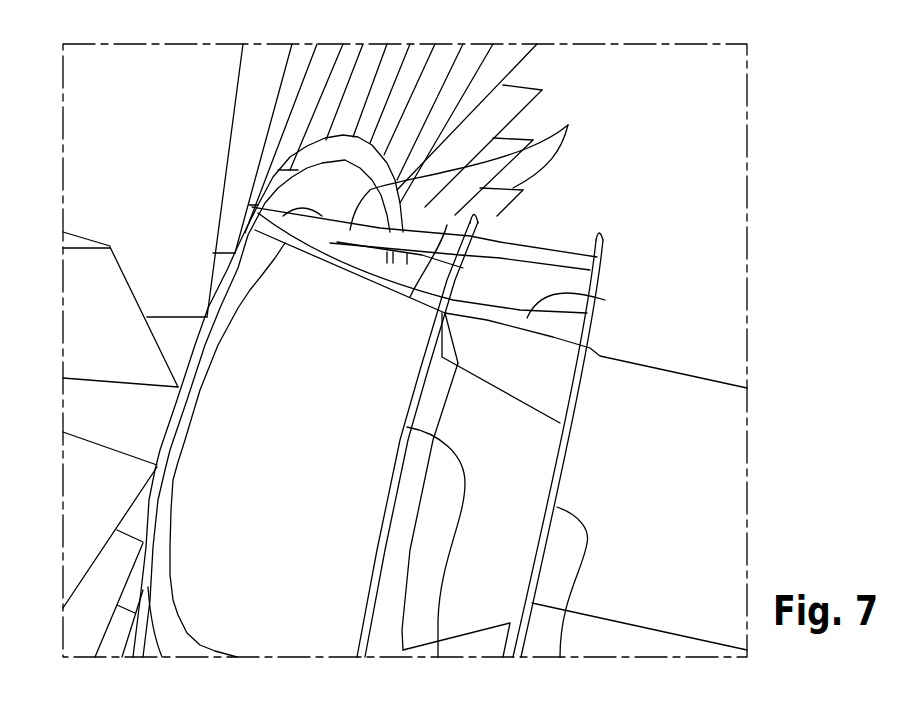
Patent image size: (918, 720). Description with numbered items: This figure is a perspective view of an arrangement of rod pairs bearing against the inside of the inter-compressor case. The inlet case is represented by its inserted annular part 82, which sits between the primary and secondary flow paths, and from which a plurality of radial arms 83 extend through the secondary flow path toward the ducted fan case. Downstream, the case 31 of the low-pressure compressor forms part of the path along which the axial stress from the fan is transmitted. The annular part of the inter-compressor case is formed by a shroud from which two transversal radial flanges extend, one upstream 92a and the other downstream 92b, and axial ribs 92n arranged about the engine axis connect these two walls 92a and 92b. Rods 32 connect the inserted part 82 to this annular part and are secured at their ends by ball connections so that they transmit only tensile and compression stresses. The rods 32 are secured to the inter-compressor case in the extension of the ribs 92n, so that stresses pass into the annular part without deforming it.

The radial arms 83 is at (190, 169).
The rods 32 is at (454, 137).
The case of the LP compressor 31 is at (252, 547).
The inserted annular part 82 is at (135, 420).
The upstream radial flange 92a is at (438, 657).
The downstream radial flange 92b is at (560, 657).
The axial ribs 92n is at (540, 273).